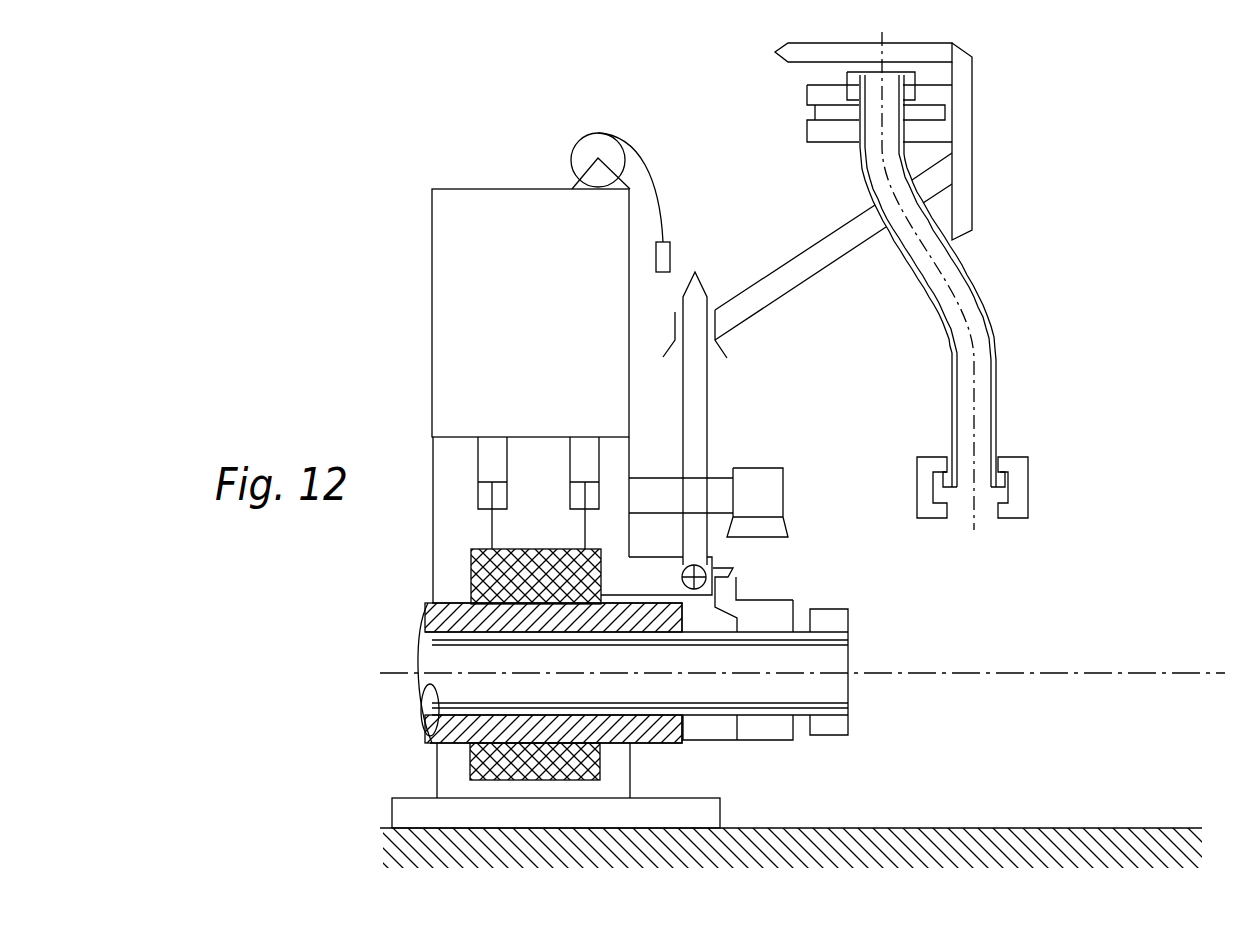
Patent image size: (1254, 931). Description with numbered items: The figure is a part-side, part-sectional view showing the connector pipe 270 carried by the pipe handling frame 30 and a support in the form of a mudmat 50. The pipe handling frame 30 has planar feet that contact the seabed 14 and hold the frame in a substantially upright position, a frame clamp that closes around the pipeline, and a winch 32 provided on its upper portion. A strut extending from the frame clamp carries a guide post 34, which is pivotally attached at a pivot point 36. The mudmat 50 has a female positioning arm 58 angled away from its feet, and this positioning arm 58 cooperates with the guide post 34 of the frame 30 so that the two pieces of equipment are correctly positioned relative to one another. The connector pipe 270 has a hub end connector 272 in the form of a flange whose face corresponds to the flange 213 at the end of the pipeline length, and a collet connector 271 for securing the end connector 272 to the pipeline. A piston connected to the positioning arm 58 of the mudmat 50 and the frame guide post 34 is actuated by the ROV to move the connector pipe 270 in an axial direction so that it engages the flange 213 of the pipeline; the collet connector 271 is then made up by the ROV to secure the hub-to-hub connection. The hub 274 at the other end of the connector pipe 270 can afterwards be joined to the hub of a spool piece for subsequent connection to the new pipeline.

The seabed 14 is at (1145, 843).
The pipe handling frame 30 is at (418, 313).
The winch 32 is at (580, 140).
The guide post 34 is at (698, 413).
The pivot point 36 is at (705, 577).
The mudmat 50 is at (953, 137).
The female positioning arm 58 is at (717, 340).
The flange 213 is at (838, 627).
The connector pipe 270 is at (998, 310).
The collet connector 271 is at (1018, 507).
The hub end connector 272 is at (1012, 480).
The hub 274 is at (918, 77).